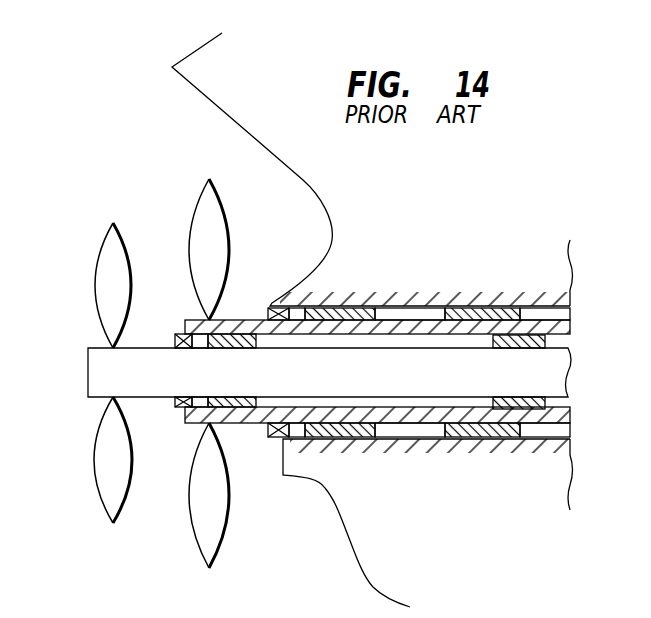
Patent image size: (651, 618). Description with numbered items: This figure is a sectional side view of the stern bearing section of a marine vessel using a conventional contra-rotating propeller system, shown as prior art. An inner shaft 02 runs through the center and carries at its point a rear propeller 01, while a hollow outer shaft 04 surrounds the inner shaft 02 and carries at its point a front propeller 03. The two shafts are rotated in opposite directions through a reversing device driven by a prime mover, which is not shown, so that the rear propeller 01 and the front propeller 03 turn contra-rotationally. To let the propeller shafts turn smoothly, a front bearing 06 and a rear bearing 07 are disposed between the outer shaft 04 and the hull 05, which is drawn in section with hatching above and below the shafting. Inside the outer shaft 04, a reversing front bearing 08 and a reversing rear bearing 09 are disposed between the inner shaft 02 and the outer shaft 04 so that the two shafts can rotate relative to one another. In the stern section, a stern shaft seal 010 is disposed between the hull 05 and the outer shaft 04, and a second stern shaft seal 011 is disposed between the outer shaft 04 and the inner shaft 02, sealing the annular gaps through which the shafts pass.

The rear propeller 01 is at (94, 288).
The inner shaft 02 is at (88, 375).
The front propeller 03 is at (192, 497).
The outer shaft 04 is at (249, 425).
The hull 05 is at (357, 525).
The front bearing 06 is at (494, 438).
The rear bearing 07 is at (379, 440).
The reversing front bearing 08 is at (523, 338).
The reversing rear bearing 09 is at (246, 318).
The stern shaft seal 010 is at (272, 296).
The stern shaft seal 011 is at (176, 330).